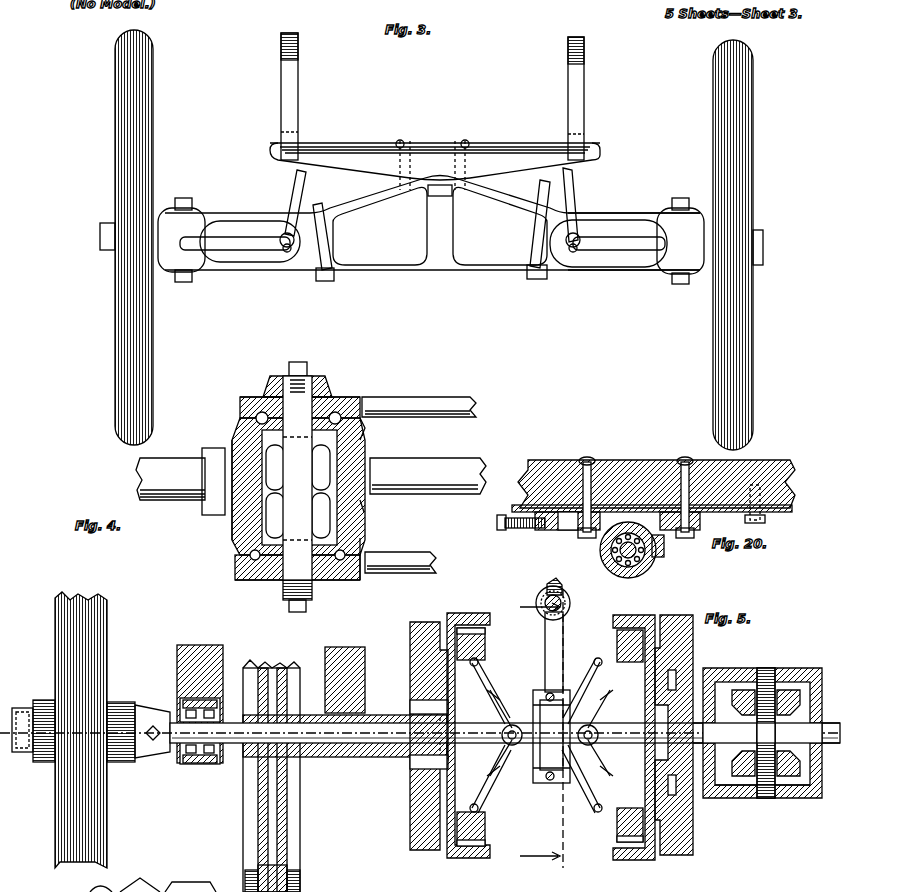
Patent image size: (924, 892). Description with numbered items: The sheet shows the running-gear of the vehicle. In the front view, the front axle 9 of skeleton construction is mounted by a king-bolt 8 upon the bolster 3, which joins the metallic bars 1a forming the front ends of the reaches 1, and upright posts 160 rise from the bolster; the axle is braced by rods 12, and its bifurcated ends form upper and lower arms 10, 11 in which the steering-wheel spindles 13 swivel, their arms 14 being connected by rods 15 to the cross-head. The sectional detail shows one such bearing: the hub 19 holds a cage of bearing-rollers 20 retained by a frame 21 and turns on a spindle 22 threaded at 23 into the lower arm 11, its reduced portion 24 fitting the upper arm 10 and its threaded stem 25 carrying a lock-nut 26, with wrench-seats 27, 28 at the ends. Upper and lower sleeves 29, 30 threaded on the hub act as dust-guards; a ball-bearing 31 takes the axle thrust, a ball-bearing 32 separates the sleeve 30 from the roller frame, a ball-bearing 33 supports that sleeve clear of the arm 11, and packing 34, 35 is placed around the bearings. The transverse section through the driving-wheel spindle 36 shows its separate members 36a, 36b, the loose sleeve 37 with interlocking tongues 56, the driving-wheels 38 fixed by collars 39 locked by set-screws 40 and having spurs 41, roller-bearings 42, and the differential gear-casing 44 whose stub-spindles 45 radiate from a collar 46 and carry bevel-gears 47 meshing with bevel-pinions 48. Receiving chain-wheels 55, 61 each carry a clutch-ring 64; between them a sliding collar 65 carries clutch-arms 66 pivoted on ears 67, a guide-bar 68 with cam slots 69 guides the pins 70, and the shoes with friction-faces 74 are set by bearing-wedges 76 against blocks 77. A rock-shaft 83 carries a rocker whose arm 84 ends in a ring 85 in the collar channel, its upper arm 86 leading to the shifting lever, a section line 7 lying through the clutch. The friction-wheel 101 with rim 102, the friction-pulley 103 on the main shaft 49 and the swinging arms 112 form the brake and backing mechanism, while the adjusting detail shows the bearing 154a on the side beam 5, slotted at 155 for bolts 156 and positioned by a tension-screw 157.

In FIG. 5, the reach 1 is at (348, 655).
In FIG. 3, the metallic bar 1a is at (280, 136).
In FIG. 3, the bolster 3 is at (495, 147).
In FIG. 20, the side beam 5 is at (768, 470).
In FIG. 5, the side beam 5 is at (205, 648).
In FIG. 5, the diagonal brace 7 is at (548, 731).
In FIG. 3, the king-bolt 8 is at (440, 150).
In FIG. 3, the front axle 9 is at (432, 223).
In FIG. 3, the upper arm 10 is at (632, 222).
In FIG. 4, the upper arm 10 is at (450, 405).
In FIG. 3, the lower arm 11 is at (620, 272).
In FIG. 4, the lower arm 11 is at (420, 562).
In FIG. 3, the rod 12 is at (320, 205).
In FIG. 4, the steering-wheel spindle 13 is at (182, 462).
In FIG. 3, the arm 14 is at (260, 246).
In FIG. 4, the arm 14 is at (425, 473).
In FIG. 3, the rod 15 is at (295, 196).
In FIG. 3, the hub 19 is at (185, 258).
In FIG. 4, the hub 19 is at (238, 515).
In FIG. 4, the bearing-rollers 20 is at (262, 448).
In FIG. 4, the frame 21 is at (240, 556).
In FIG. 4, the spindle 22 is at (360, 506).
In FIG. 4, the threaded portion 23 is at (318, 592).
In FIG. 4, the reduced portion 24 is at (280, 400).
In FIG. 4, the threaded stem 25 is at (318, 378).
In FIG. 4, the lock-nut 26 is at (290, 376).
In FIG. 3, the wrench-seat 27 is at (192, 276).
In FIG. 4, the wrench-seat 27 is at (296, 612).
In FIG. 3, the wrench-seat 28 is at (190, 205).
In FIG. 4, the wrench-seat 28 is at (300, 362).
In FIG. 4, the upper sleeve 29 is at (362, 428).
In FIG. 4, the lower sleeve 30 is at (360, 542).
In FIG. 4, the ball-bearing 31 is at (365, 402).
In FIG. 4, the ball-bearing 32 is at (365, 575).
In FIG. 4, the ball-bearing 33 is at (255, 575).
In FIG. 4, the packing 34 is at (256, 415).
In FIG. 4, the packing 35 is at (270, 583).
In FIG. 5, the driving-wheel spindle 36 is at (318, 745).
In FIG. 5, the driving-spindle member 36a is at (695, 730).
In FIG. 5, the driving-spindle member 36b is at (800, 745).
In FIG. 5, the loose sleeve 37 is at (340, 752).
In FIG. 5, the driving-wheel 38 is at (90, 820).
In FIG. 5, the collar 39 is at (152, 745).
In FIG. 5, the set-screw 40 is at (154, 725).
In FIG. 5, the spur 41 is at (137, 710).
In FIG. 20, the roller-bearing 42 is at (658, 548).
In FIG. 5, the roller-bearing 42 is at (193, 762).
In FIG. 5, the differential gear-casing 44 is at (810, 680).
In FIG. 5, the stub-spindle 45 is at (768, 680).
In FIG. 5, the collar 46 is at (720, 792).
In FIG. 5, the bevel-gear 47 is at (782, 690).
In FIG. 5, the bevel-pinion 48 is at (748, 690).
In FIG. 5, the main shaft 49 is at (130, 884).
In FIG. 5, the receiving chain-wheel 55 is at (680, 622).
In FIG. 5, the interlocking tongues 56 is at (395, 750).
In FIG. 5, the receiving chain-wheel 61 is at (432, 622).
In FIG. 5, the clutch-ring 64 is at (474, 618).
In FIG. 5, the sliding collar 65 is at (572, 700).
In FIG. 5, the clutch-arm 66 is at (494, 690).
In FIG. 5, the ear 67 is at (512, 745).
In FIG. 5, the guide-bar 68 is at (490, 748).
In FIG. 5, the cam slot 69 is at (486, 698).
In FIG. 5, the guide-pin 70 is at (492, 665).
In FIG. 5, the friction-face 74 is at (487, 630).
In FIG. 5, the bearing-wedge 76 is at (615, 828).
In FIG. 5, the block 77 is at (445, 850).
In FIG. 5, the rock-shaft 83 is at (540, 598).
In FIG. 5, the downwardly-extending arm 84 is at (560, 648).
In FIG. 5, the ring 85 is at (548, 784).
In FIG. 5, the upper arm 86 is at (566, 575).
In FIG. 5, the friction-wheel 101 is at (300, 835).
In FIG. 5, the friction-rim 102 is at (302, 885).
In FIG. 5, the friction-pulley 103 is at (105, 888).
In FIG. 5, the swinging arm 112 is at (172, 884).
In FIG. 20, the adjustable bearing 154a is at (655, 562).
In FIG. 5, the adjustable bearing 154a is at (212, 760).
In FIG. 20, the slot 155 is at (570, 518).
In FIG. 20, the bolt 156 is at (607, 517).
In FIG. 20, the tension-screw 157 is at (520, 530).
In FIG. 3, the post 160 is at (298, 55).